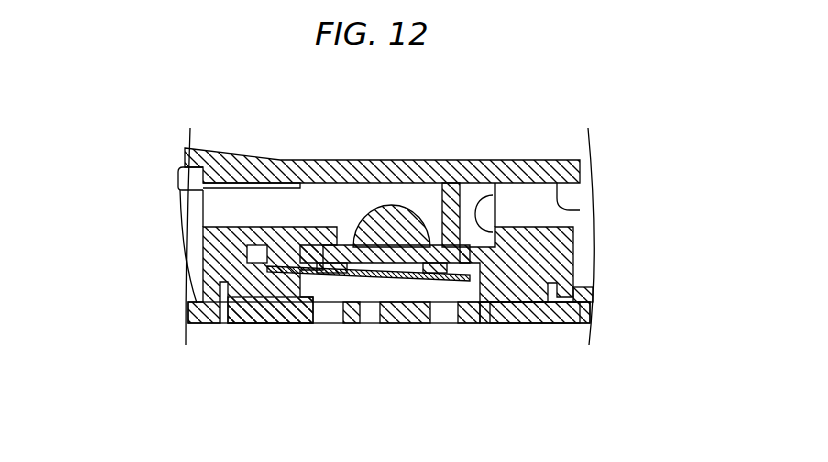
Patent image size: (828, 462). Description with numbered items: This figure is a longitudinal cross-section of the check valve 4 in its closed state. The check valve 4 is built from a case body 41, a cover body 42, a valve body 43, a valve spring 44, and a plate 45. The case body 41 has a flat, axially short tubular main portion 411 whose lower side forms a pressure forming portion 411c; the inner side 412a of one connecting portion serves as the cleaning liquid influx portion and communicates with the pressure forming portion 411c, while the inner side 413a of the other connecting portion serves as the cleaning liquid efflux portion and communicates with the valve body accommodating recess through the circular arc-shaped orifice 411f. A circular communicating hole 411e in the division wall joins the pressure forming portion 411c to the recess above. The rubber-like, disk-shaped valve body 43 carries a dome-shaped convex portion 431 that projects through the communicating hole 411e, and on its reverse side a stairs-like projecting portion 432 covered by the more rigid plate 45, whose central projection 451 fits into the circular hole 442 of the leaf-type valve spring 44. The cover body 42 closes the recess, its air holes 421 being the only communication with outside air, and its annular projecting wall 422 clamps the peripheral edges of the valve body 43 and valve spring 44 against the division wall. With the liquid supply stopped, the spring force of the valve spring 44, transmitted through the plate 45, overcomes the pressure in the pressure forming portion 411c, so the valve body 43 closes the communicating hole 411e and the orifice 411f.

The check valve 4 is at (377, 249).
The case body 41 is at (377, 170).
The main portion 411 is at (363, 160).
The pressure forming portion 411c is at (455, 160).
The communicating hole 411e is at (343, 226).
The orifice 411f is at (553, 160).
The inner side of the connecting portion 412a is at (182, 186).
The inner side of the connecting portion 413a is at (580, 208).
The cover body 42 is at (390, 325).
The air holes 421 is at (337, 310).
The projecting wall 422 is at (293, 305).
The valve body 43 is at (385, 175).
The convex portion 431 is at (400, 205).
The stairs-like projecting portion 432 is at (423, 312).
The valve spring 44 is at (303, 312).
The circular hole 442 is at (355, 310).
The plate 45 is at (395, 310).
The projection 451 is at (376, 312).